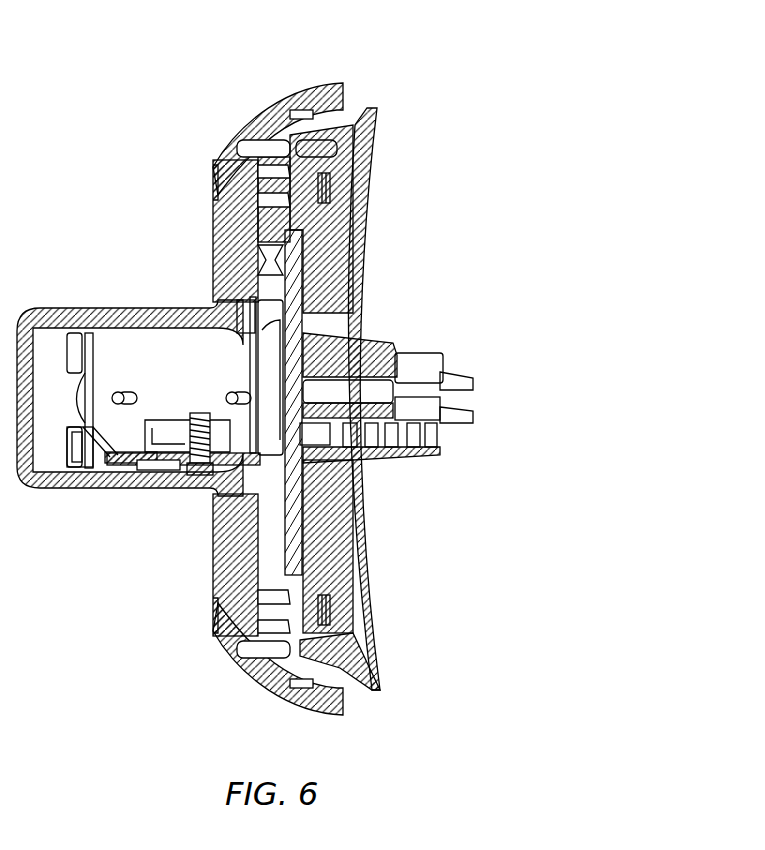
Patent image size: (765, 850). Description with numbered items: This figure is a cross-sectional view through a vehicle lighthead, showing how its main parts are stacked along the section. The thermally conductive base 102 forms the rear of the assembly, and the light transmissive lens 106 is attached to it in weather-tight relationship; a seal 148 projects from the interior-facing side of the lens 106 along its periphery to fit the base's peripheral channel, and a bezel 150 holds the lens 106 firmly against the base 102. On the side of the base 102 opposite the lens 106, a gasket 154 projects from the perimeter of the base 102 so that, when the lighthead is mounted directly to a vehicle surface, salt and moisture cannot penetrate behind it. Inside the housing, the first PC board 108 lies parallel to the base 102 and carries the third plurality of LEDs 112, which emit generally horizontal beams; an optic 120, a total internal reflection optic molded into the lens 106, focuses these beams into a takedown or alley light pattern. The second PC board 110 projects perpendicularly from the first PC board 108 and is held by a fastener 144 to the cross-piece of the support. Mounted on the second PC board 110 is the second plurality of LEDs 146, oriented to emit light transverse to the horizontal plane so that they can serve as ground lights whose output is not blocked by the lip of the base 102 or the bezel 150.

The thermally conductive base 102 is at (330, 634).
The light transmissive lens 106 is at (122, 305).
The first PC board 108 is at (353, 233).
The second PC board 110 is at (93, 470).
The third plurality of LEDs 112 is at (221, 233).
The optic 120 is at (227, 241).
The fastener 144 is at (186, 473).
The second plurality of LEDs 146 is at (147, 470).
The seal 148 is at (259, 166).
The bezel 150 is at (293, 92).
The gasket 154 is at (366, 122).